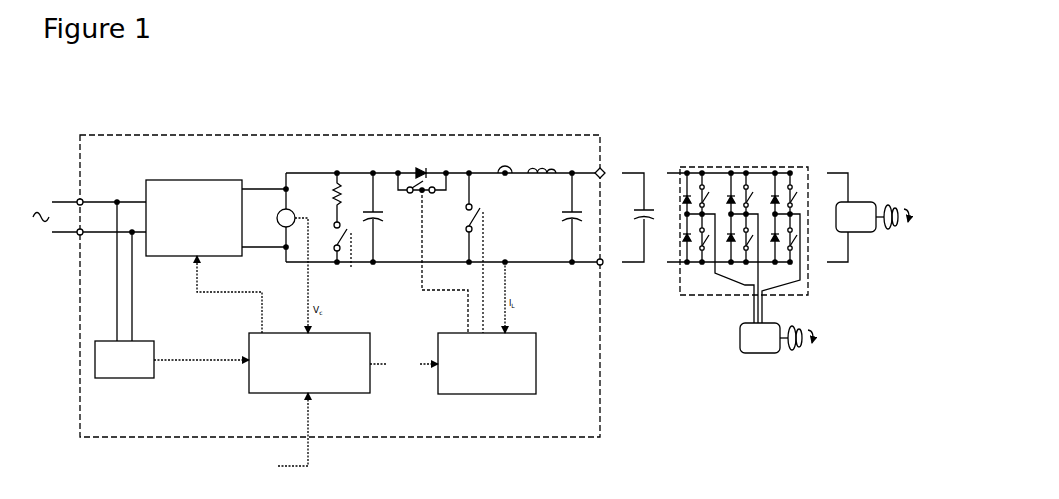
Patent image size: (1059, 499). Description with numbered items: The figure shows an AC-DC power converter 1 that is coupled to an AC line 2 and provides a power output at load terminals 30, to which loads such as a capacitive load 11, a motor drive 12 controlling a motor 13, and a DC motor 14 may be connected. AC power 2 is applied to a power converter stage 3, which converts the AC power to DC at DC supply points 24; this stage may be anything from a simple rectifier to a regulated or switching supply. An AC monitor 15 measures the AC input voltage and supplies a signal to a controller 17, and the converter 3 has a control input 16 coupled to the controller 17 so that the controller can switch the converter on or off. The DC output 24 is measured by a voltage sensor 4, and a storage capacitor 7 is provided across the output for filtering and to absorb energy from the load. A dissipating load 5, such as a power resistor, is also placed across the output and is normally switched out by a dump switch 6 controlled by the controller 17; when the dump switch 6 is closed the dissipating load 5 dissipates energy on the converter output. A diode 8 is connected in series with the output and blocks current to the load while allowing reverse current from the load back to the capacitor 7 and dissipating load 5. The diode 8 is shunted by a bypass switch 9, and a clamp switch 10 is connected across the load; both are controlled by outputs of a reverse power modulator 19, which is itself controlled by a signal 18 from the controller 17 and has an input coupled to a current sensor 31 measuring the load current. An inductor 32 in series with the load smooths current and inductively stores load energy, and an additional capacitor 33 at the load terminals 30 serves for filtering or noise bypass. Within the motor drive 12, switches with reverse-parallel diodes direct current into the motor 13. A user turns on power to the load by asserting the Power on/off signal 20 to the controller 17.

The power converter 1 is at (572, 136).
The AC line 2 is at (89, 211).
The power converter stage 3 is at (216, 210).
The voltage sensor 4 is at (287, 210).
The dissipating load 5 is at (344, 196).
The dump switch 6 is at (336, 245).
The storage capacitor 7 is at (380, 217).
The diode 8 is at (422, 165).
The bypass switch 9 is at (433, 253).
The clamp switch 10 is at (465, 252).
The capacitive load 11 is at (640, 206).
The motor drive 12 is at (737, 231).
The motor 13 is at (776, 355).
The DC motor 14 is at (868, 208).
The AC monitor 15 is at (172, 290).
The control input 16 is at (262, 333).
The controller 17 is at (364, 386).
The signal 18 is at (404, 364).
The reverse power modulator 19 is at (528, 387).
The Power on/off signal 20 is at (224, 432).
The DC supply points 24 is at (249, 191).
The load terminals 30 is at (603, 179).
The current sensor 31 is at (505, 242).
The inductor 32 is at (542, 161).
The capacitor 33 is at (561, 217).